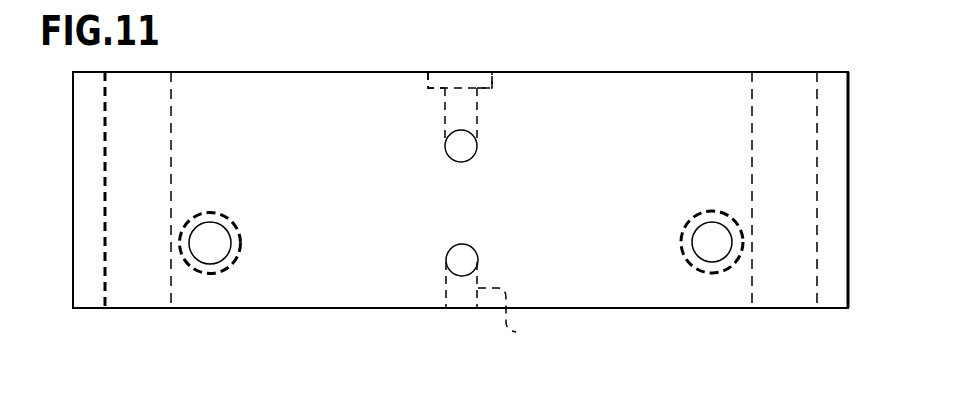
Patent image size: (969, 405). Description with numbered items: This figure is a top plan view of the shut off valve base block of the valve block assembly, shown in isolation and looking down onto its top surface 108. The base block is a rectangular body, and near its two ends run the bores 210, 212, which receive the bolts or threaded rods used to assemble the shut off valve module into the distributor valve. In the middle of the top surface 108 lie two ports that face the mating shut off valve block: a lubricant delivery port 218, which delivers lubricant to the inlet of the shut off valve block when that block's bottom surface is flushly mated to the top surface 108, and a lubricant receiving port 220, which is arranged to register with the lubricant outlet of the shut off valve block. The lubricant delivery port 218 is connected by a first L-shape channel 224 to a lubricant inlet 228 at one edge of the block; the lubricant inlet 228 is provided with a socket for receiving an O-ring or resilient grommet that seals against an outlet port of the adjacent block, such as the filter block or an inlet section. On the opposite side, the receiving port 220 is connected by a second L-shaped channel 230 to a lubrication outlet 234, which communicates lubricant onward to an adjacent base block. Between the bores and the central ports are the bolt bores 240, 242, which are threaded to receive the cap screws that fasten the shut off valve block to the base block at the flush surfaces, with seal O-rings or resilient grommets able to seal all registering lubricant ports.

The top surface 108 is at (626, 90).
The bore 210 is at (105, 184).
The bore 212 is at (815, 185).
The lubricant delivery port 218 is at (472, 148).
The lubricant receiving port 220 is at (467, 250).
The first L-shape channel 224 is at (440, 107).
The lubricant inlet 228 is at (468, 72).
The second L-shaped channel 230 is at (518, 317).
The lubrication outlet 234 is at (462, 312).
The bolt bore 240 is at (232, 243).
The bolt bore 242 is at (690, 266).